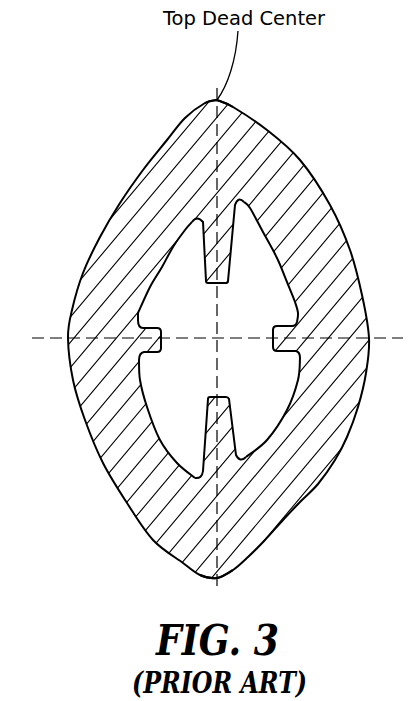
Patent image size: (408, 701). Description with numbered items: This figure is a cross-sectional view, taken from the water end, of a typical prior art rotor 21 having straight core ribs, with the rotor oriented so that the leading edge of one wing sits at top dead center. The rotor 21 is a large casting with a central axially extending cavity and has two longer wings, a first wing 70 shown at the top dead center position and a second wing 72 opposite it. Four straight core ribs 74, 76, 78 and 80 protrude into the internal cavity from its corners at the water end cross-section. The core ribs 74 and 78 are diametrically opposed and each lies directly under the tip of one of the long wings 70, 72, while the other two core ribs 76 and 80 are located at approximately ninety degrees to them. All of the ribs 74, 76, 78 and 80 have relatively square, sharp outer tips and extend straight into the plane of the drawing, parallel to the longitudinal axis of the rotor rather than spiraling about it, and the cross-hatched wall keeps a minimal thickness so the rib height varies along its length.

The prior art rotor 21 is at (107, 130).
The first wing 70 is at (218, 99).
The second wing 72 is at (218, 578).
The straight core rib 74 is at (223, 240).
The straight core rib 76 is at (283, 330).
The straight core rib 78 is at (222, 415).
The straight core rib 80 is at (143, 352).